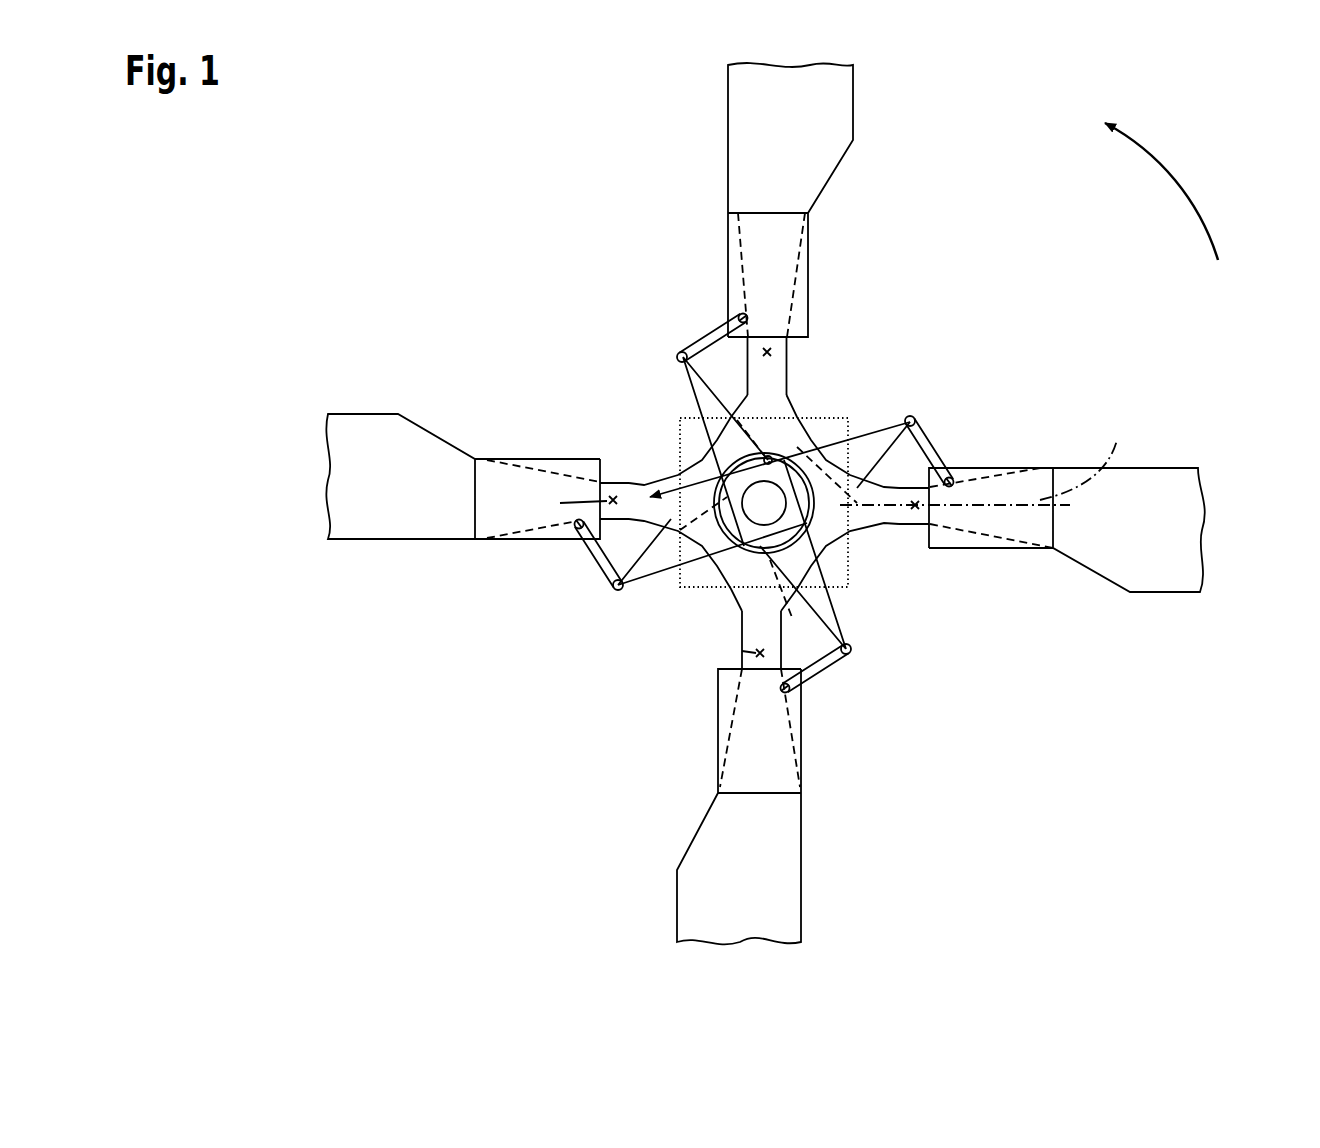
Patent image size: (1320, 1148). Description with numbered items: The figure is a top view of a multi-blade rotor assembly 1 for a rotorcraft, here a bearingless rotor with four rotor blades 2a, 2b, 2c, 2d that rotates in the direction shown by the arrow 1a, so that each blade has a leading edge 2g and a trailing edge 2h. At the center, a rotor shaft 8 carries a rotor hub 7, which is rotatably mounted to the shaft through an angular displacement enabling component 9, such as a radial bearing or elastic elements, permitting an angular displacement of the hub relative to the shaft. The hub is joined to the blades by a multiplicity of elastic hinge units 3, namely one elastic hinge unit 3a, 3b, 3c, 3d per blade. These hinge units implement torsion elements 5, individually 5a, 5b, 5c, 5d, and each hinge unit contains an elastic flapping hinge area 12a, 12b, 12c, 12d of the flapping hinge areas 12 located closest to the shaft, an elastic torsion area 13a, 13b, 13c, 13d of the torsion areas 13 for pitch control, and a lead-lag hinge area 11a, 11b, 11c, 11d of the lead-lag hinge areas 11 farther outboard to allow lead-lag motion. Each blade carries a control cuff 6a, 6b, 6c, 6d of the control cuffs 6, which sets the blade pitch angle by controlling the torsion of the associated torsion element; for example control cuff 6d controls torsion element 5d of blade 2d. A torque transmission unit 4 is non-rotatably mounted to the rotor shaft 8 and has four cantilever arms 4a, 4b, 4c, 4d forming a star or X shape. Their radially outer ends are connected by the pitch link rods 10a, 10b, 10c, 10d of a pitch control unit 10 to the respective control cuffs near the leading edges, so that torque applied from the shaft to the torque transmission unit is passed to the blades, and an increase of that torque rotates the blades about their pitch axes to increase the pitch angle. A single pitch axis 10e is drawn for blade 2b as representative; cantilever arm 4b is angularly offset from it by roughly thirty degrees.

The multi-blade rotor assembly 1 is at (360, 176).
The arrow 1a is at (1175, 180).
The rotor blade 2a is at (742, 120).
The rotor blade 2b is at (1160, 522).
The rotor blade 2c is at (690, 915).
The rotor blade 2d is at (368, 470).
The leading edge 2g is at (722, 168).
The trailing edge 2h is at (842, 173).
The elastic hinge units 3 is at (782, 495).
The elastic hinge unit 3a is at (740, 356).
The elastic hinge unit 3b is at (930, 550).
The elastic hinge unit 3c is at (740, 651).
The elastic hinge unit 3d is at (700, 512).
The torque transmission unit 4 is at (771, 515).
The cantilever arm 4a is at (744, 387).
The cantilever arm 4b is at (884, 476).
The cantilever arm 4c is at (850, 658).
The cantilever arm 4d is at (710, 578).
The torsion elements 5 is at (749, 502).
The torsion element 5a is at (834, 356).
The torsion element 5b is at (894, 541).
The torsion element 5c is at (737, 643).
The torsion element 5d is at (630, 484).
The control cuffs 6 is at (790, 504).
The control cuff 6a is at (803, 307).
The control cuff 6b is at (985, 548).
The control cuff 6c is at (725, 727).
The control cuff 6d is at (556, 540).
The rotor hub 7 is at (760, 565).
The rotor shaft 8 is at (812, 475).
The angular displacement enabling component 9 is at (787, 463).
The pitch control unit 10 is at (832, 513).
The pitch link rod 10a is at (712, 345).
The pitch link rod 10b is at (952, 468).
The pitch link rod 10c is at (817, 698).
The pitch link rod 10d is at (582, 535).
The pitch axis 10e is at (1128, 432).
The lead-lag hinge areas 11 is at (735, 469).
The lead-lag hinge area 11a is at (767, 342).
The lead-lag hinge area 11b is at (914, 530).
The lead-lag hinge area 11c is at (727, 698).
The lead-lag hinge area 11d is at (560, 503).
The elastic flapping hinge areas 12 is at (783, 499).
The elastic flapping hinge area 12a is at (683, 351).
The elastic flapping hinge area 12b is at (833, 612).
The elastic flapping hinge area 12c is at (812, 685).
The elastic flapping hinge area 12d is at (666, 497).
The elastic torsion areas 13 is at (791, 523).
The elastic torsion area 13a is at (806, 277).
The elastic torsion area 13b is at (1003, 460).
The elastic torsion area 13c is at (822, 752).
The elastic torsion area 13d is at (541, 455).